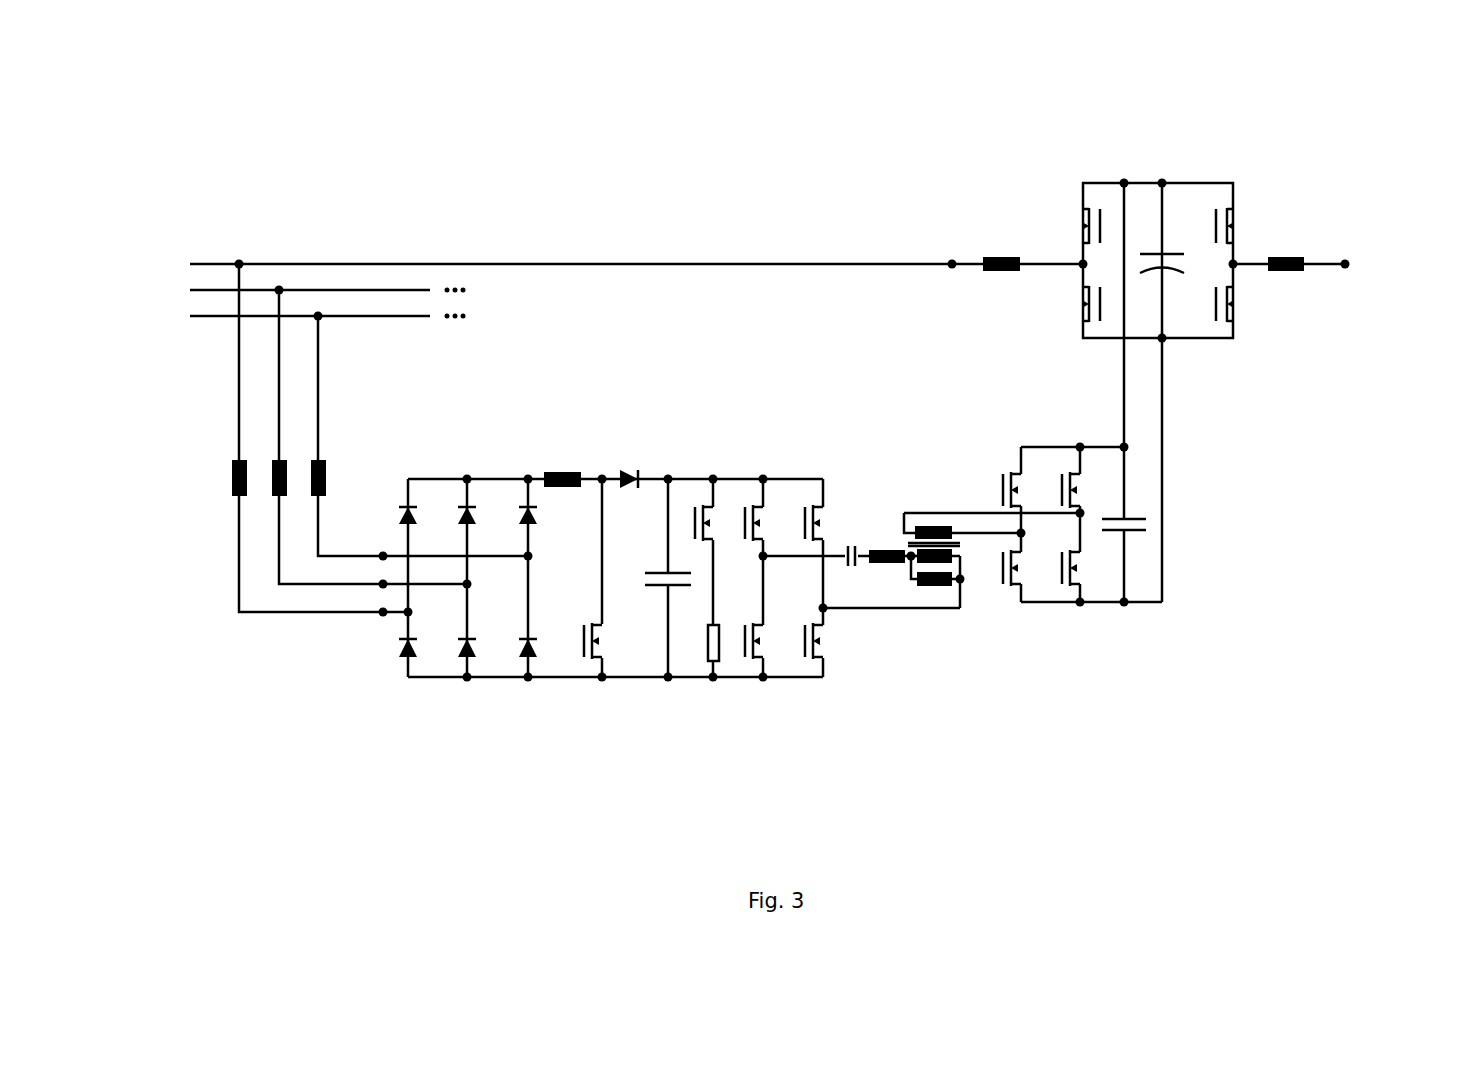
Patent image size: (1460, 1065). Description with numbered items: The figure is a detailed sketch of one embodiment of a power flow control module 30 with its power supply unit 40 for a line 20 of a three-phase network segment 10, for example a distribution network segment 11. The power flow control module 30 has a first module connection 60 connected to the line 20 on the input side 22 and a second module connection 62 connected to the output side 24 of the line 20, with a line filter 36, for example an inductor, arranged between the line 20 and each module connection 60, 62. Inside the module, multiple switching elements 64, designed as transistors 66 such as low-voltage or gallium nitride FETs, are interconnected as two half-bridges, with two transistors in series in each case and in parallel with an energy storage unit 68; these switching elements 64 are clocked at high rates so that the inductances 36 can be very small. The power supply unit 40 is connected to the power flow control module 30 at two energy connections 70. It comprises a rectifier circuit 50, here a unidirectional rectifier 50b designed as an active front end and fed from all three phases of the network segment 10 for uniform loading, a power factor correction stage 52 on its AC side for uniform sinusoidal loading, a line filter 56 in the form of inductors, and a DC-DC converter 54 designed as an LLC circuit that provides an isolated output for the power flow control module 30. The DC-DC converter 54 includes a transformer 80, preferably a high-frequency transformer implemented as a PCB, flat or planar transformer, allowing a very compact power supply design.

The three-phase network segment 10 is at (760, 415).
The distribution network segment 11 is at (650, 123).
The line 20 is at (535, 262).
The input side 22 is at (153, 281).
The output side 24 is at (1360, 286).
The power flow control module 30 is at (1199, 162).
The line filter 36 is at (1000, 272).
The power supply unit 40 is at (1150, 696).
The rectifier circuit 50 is at (453, 614).
The unidirectional rectifier 50b is at (577, 692).
The power factor correction stage 52 is at (662, 460).
The DC-DC converter 54 is at (1092, 692).
The line filter 56 is at (272, 475).
The first module connection 60 is at (1081, 263).
The second module connection 62 is at (1236, 262).
The switching elements 64 is at (1177, 261).
The transistors 66 is at (1066, 204).
The energy storage unit 68 is at (1165, 252).
The energy connections 70 is at (1124, 181).
The transformer 80 is at (892, 491).